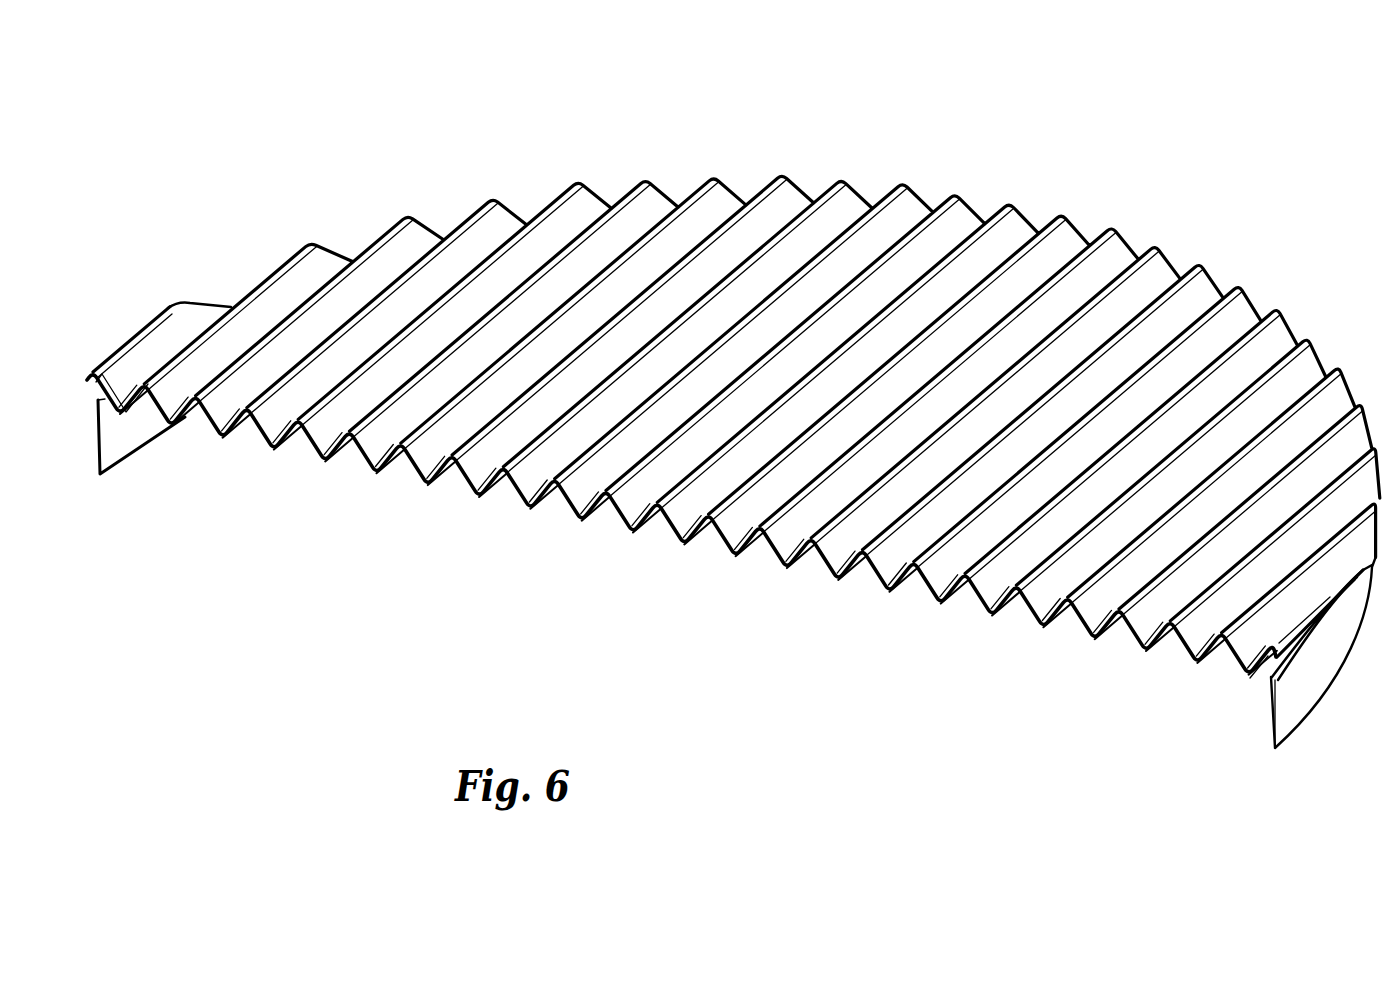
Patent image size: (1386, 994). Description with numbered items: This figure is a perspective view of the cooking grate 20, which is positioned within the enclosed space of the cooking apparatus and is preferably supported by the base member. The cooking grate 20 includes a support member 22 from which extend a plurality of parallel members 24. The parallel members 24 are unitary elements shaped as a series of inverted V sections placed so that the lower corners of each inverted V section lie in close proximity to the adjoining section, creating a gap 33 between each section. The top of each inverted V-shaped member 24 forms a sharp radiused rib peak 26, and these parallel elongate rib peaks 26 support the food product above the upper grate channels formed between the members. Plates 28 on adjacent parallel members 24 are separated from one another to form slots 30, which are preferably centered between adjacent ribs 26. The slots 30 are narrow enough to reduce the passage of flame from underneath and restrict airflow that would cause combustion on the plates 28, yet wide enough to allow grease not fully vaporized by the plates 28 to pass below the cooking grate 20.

The cooking grate 20 is at (330, 223).
The support member 22 is at (1308, 685).
The parallel members 24 is at (1107, 367).
The rib peak 26 is at (582, 222).
The plates 28 is at (993, 578).
The slots 30 is at (1036, 628).
The gap 33 is at (682, 552).